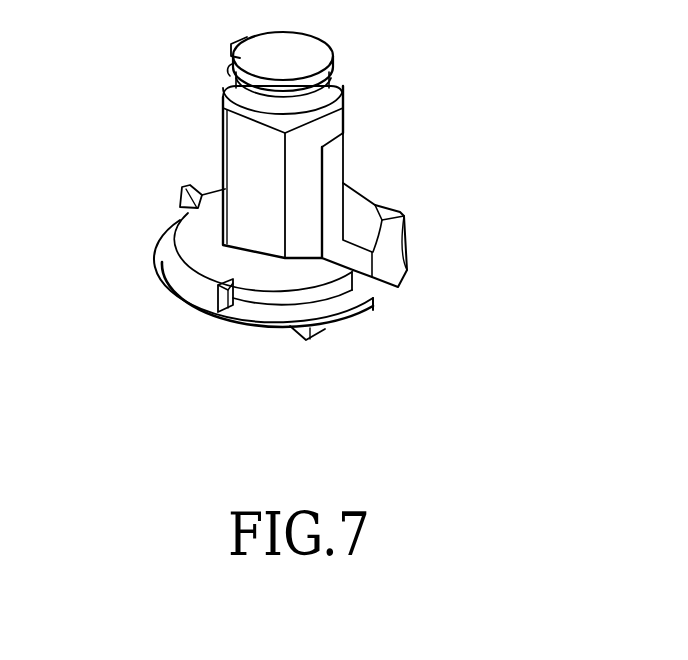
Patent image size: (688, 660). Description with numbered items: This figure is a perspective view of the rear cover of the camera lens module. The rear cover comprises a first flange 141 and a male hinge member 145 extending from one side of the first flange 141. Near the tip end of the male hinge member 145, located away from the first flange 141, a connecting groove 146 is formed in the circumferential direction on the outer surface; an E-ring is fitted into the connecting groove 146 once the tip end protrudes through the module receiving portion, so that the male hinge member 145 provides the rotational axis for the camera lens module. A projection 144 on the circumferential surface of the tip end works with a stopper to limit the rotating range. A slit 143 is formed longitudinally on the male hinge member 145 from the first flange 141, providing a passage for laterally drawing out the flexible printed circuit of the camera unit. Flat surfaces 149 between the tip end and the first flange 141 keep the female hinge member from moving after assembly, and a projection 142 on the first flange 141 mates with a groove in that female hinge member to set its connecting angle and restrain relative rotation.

The first flange 141 is at (178, 262).
The projection 142 is at (184, 206).
The slit 143 is at (331, 190).
The projection 144 is at (228, 75).
The male hinge member 145 is at (207, 119).
The connecting groove 146 is at (337, 84).
The flat surfaces 149 is at (240, 176).